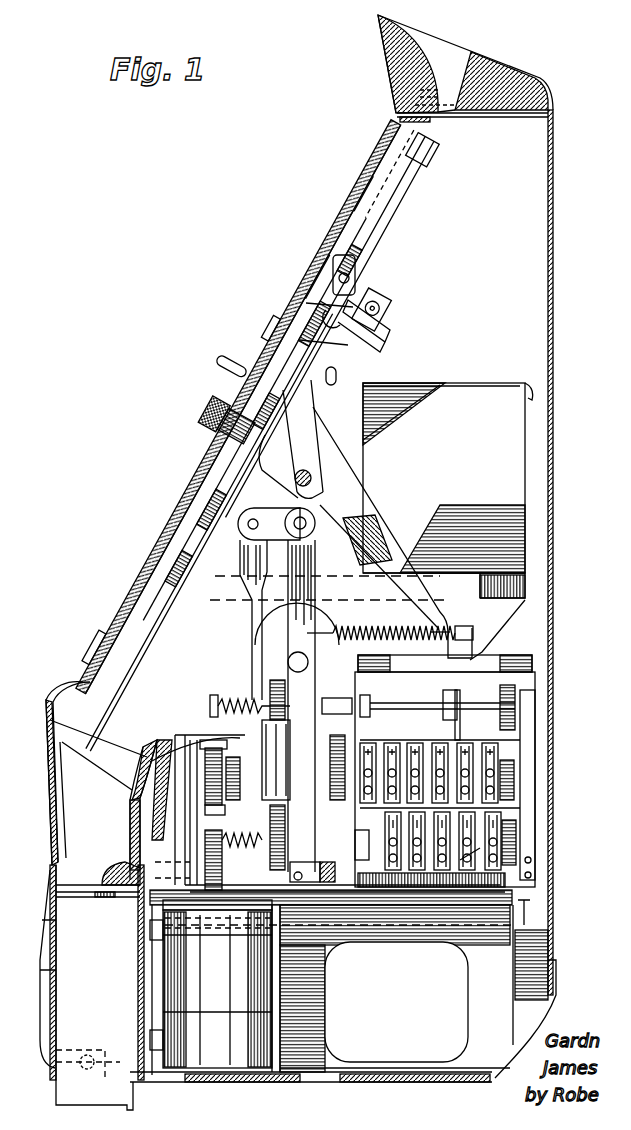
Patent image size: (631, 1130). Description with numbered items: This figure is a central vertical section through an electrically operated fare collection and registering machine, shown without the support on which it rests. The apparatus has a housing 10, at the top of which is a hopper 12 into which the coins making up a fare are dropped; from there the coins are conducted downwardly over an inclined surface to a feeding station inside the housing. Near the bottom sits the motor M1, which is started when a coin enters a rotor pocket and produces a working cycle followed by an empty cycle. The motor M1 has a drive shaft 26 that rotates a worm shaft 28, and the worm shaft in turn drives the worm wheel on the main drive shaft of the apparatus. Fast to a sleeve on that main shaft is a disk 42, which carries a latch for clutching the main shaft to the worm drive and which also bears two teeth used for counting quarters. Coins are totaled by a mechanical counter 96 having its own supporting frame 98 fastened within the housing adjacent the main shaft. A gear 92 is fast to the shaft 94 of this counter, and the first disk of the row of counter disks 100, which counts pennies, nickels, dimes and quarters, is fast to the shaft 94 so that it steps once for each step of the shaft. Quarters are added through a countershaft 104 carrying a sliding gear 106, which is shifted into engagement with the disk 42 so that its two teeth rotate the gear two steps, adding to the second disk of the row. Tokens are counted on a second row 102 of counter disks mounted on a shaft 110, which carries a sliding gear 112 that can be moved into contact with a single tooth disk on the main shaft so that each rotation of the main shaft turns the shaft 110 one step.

The housing 10 is at (560, 318).
The hopper 12 is at (518, 96).
The drive shaft 26 is at (290, 878).
The worm shaft 28 is at (193, 763).
The disk 42 is at (195, 730).
The gear 92 is at (345, 735).
The shaft 94 is at (470, 762).
The mechanical counter 96 is at (540, 705).
The supporting frame 98 is at (530, 840).
The row of counter disks 100 is at (492, 773).
The second row of counter disks 102 is at (495, 832).
The countershaft 104 is at (384, 712).
The sliding gear 106 is at (270, 685).
The shaft 110 is at (480, 850).
The sliding gear 112 is at (275, 856).
The motor M1 is at (212, 990).